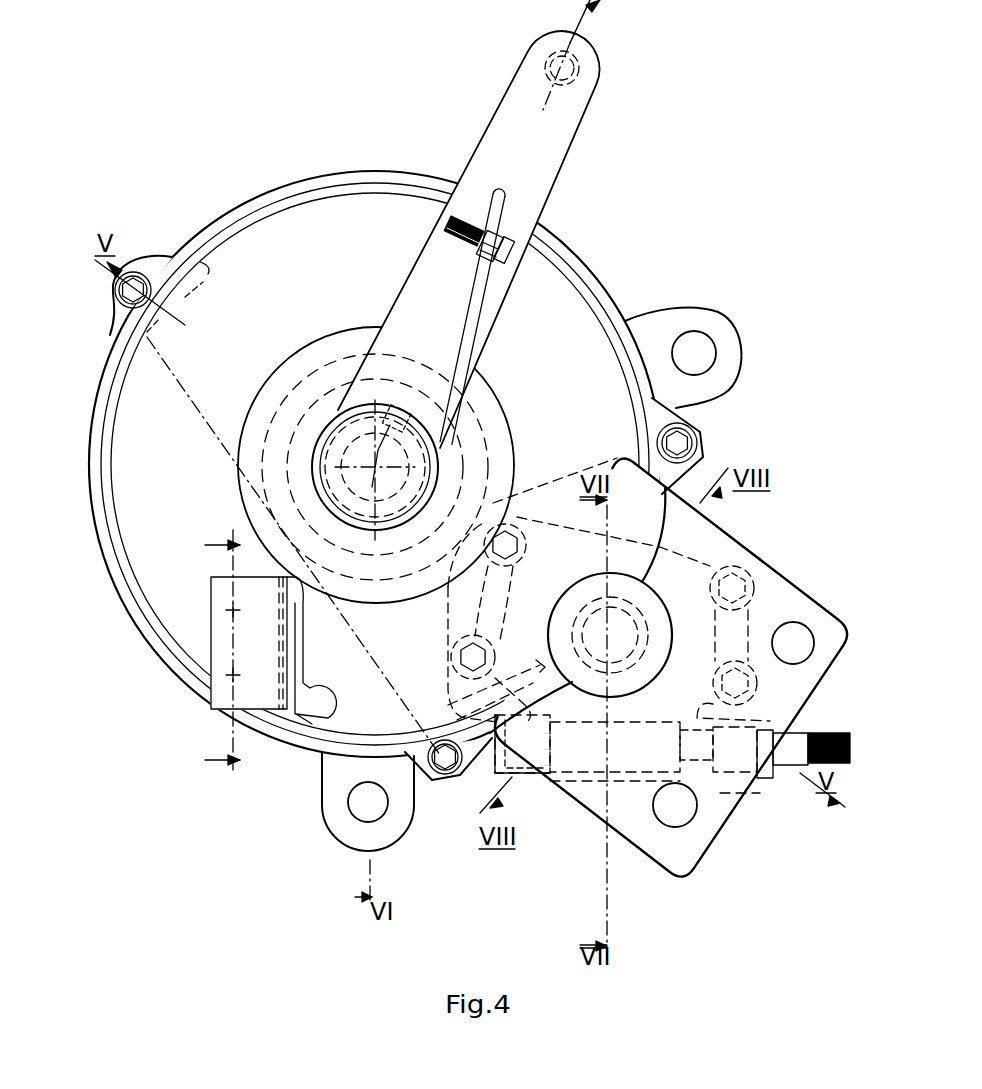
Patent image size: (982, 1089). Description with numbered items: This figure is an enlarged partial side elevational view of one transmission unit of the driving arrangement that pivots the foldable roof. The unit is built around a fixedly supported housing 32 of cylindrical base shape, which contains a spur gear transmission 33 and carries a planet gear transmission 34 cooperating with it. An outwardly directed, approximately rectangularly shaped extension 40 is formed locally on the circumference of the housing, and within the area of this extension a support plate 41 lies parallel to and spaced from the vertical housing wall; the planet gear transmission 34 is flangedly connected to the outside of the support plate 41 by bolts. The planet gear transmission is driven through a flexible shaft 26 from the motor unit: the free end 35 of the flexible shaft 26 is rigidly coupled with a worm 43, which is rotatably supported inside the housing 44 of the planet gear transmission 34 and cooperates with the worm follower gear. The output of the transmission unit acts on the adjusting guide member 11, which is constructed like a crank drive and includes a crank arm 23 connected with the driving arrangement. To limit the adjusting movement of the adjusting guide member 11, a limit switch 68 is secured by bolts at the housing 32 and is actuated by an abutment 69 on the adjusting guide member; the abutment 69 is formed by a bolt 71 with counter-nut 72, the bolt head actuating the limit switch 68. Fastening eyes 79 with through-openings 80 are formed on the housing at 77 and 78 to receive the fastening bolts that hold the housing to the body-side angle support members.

The adjusting guide member 11 is at (458, 155).
The crank arm 23 is at (505, 127).
The flexible shaft 26 is at (820, 733).
The housing 32 is at (610, 275).
The spur gear transmission 33 is at (612, 597).
The planet gear transmission 34 is at (755, 615).
The free end of the flexible shaft 35 is at (782, 772).
The extension 40 is at (681, 882).
The support plate 41 is at (724, 804).
The worm 43 is at (620, 760).
The housing of the planet gear transmission 44 is at (580, 790).
The limit switch 68 is at (322, 718).
The abutment 69 is at (512, 254).
The bolt 71 is at (494, 270).
The counter-nut 72 is at (515, 234).
The fastening eye location 77 is at (688, 302).
The fastening eye location 78 is at (334, 852).
The fastening eye 79 is at (727, 367).
The through-opening 80 is at (703, 347).